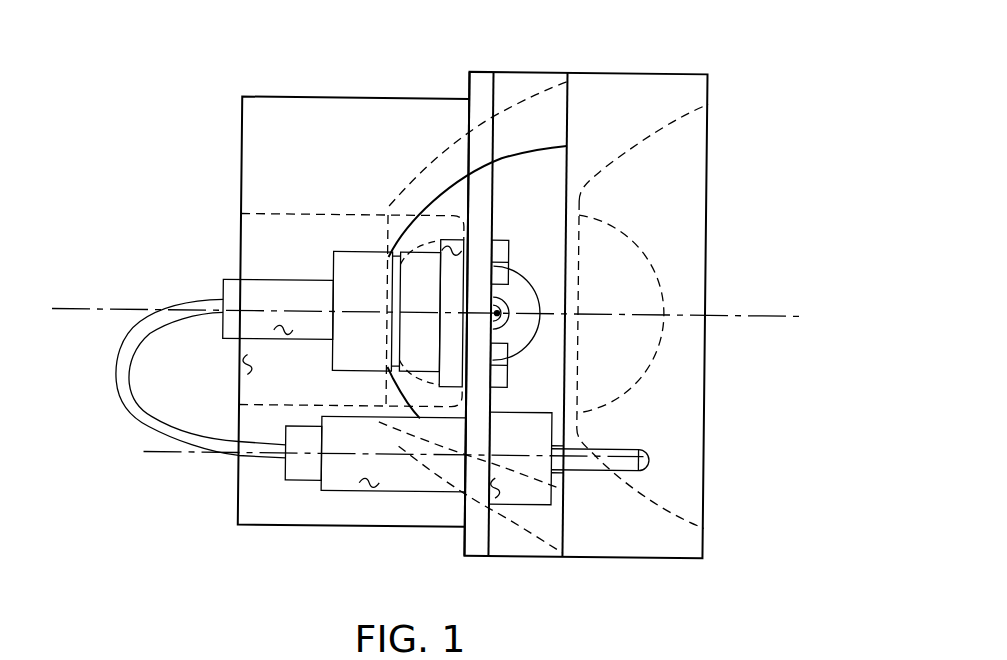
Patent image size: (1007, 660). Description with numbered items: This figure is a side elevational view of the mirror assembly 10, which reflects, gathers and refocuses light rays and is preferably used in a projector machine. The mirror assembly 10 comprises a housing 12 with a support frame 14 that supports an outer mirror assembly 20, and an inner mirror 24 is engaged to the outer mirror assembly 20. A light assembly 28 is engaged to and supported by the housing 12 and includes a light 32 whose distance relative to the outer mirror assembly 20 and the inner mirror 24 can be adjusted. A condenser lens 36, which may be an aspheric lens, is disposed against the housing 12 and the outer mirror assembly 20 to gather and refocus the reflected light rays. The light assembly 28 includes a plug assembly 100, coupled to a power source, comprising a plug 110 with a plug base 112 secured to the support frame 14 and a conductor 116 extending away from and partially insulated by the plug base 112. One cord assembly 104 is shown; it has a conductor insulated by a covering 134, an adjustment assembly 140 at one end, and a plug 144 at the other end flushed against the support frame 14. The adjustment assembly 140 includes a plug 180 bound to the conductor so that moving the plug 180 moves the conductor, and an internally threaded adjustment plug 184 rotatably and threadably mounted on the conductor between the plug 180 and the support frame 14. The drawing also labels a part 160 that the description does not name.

The mirror assembly 10 is at (770, 186).
The housing 12 is at (318, 92).
The support frame 14 is at (493, 93).
The outer mirror assembly 20 is at (548, 127).
The inner mirror 24 is at (240, 360).
The light assembly 28 is at (328, 258).
The light 32 is at (531, 283).
The condenser lens 36 is at (716, 365).
The plug assembly 100 is at (565, 500).
The cord assembly 104 is at (211, 470).
The plug 110 is at (537, 512).
The plug base 112 is at (490, 488).
The conductor 116 is at (650, 453).
The covering 134 is at (122, 400).
The adjustment assembly 140 is at (355, 246).
The plug 144 is at (368, 488).
The light source 160 is at (500, 315).
The plug 180 is at (284, 345).
The adjustment plug 184 is at (455, 250).